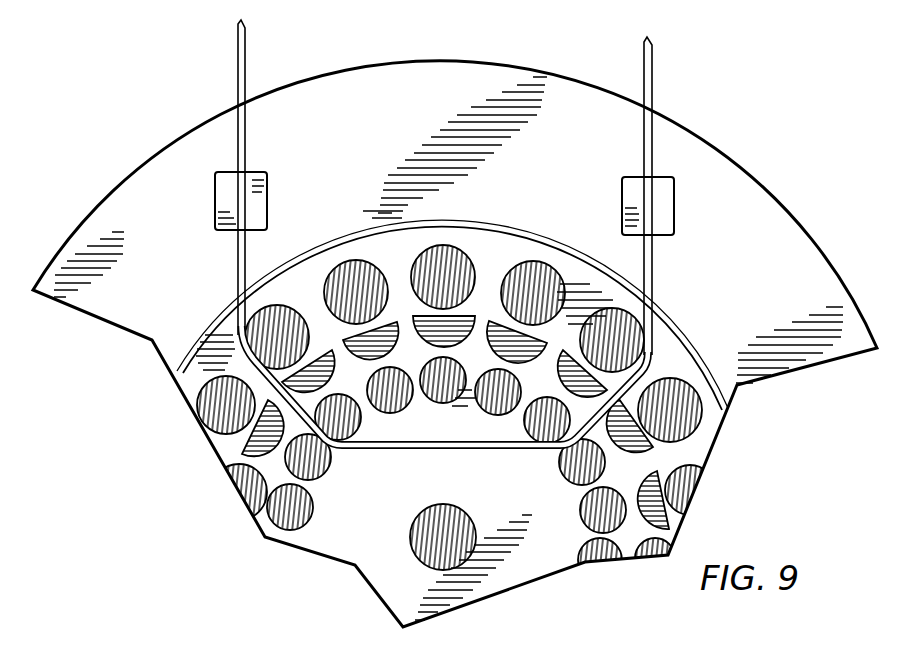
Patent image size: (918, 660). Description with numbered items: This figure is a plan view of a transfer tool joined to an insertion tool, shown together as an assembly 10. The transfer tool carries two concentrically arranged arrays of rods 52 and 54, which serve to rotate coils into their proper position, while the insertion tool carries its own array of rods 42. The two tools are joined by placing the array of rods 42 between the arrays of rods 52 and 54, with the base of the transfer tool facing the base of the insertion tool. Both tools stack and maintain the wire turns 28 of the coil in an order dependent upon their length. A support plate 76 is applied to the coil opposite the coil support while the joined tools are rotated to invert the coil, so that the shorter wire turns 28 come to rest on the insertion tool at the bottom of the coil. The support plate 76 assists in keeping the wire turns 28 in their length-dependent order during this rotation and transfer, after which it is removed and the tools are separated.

The apparatus 10 is at (716, 198).
The wire turns 28 is at (652, 124).
The array of rods 42 is at (632, 417).
The array of rods 52 is at (679, 403).
The array of rods 54 is at (582, 516).
The support plate 76 is at (408, 453).